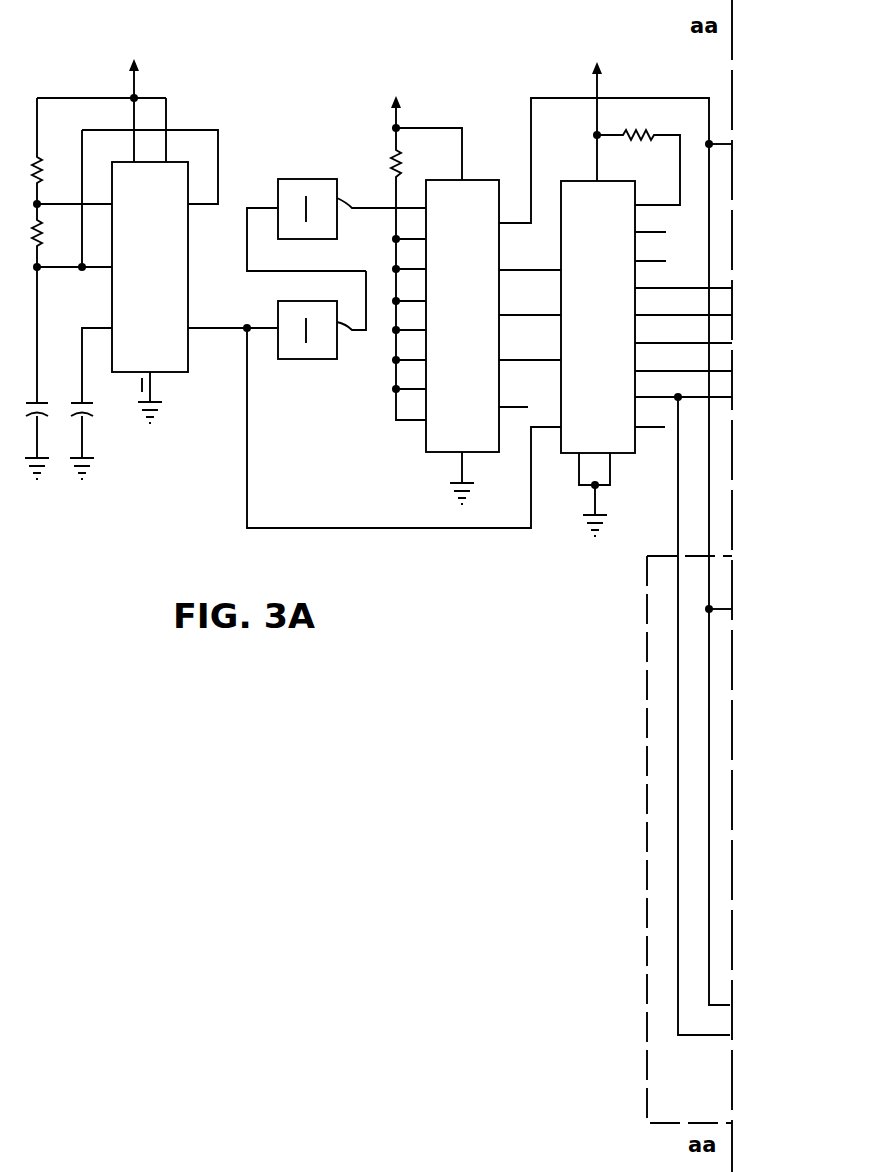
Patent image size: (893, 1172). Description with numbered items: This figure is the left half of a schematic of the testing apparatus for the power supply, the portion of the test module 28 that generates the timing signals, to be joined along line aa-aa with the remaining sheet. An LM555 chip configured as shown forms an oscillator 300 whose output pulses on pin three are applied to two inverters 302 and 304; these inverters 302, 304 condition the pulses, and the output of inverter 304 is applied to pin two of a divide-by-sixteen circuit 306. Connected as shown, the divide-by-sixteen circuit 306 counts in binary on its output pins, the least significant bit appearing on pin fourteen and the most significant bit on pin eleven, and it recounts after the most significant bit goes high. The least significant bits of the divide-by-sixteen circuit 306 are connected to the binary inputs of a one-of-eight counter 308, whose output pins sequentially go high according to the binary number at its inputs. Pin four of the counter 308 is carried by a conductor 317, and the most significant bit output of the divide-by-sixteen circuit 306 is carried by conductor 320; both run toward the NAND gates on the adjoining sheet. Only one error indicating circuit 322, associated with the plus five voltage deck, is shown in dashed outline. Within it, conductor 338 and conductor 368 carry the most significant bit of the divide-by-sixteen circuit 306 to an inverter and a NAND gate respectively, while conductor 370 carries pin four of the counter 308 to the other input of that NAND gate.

The test module 28 is at (378, 62).
The oscillator 300 is at (167, 266).
The inverter 302 is at (310, 357).
The inverter 304 is at (312, 180).
The divide-by-16 circuit 306 is at (481, 304).
The one-of-eight counter 308 is at (616, 306).
The conductor 317 is at (684, 397).
The conductor 320 is at (724, 142).
The error indicating circuit 322 is at (647, 703).
The conductor 338 is at (722, 614).
The conductor 368 is at (707, 860).
The conductor 370 is at (677, 772).